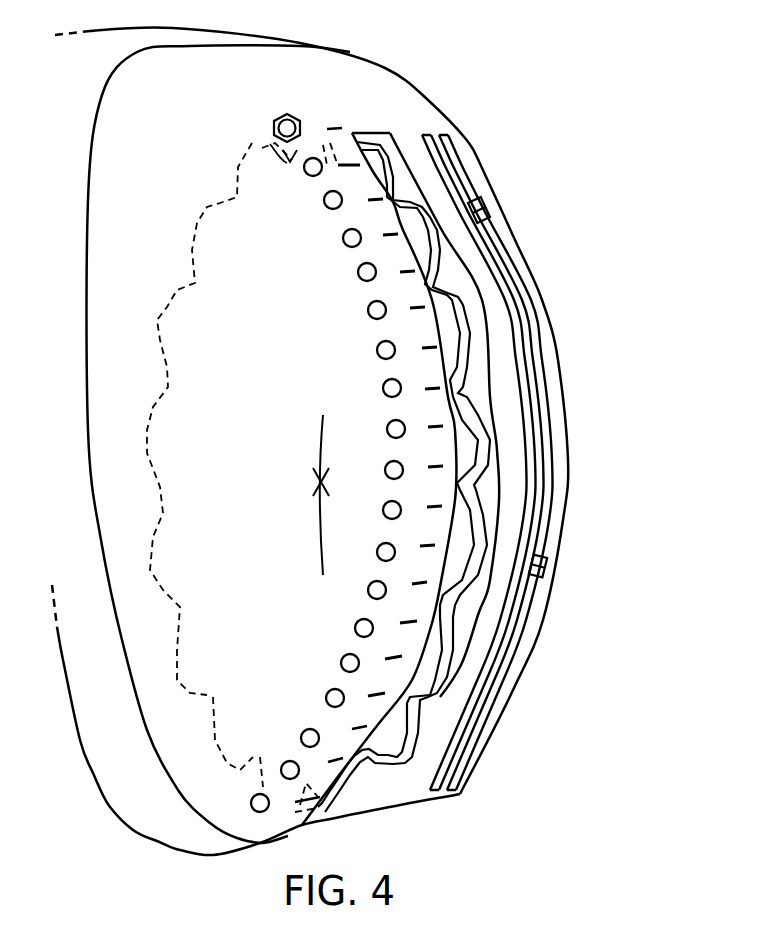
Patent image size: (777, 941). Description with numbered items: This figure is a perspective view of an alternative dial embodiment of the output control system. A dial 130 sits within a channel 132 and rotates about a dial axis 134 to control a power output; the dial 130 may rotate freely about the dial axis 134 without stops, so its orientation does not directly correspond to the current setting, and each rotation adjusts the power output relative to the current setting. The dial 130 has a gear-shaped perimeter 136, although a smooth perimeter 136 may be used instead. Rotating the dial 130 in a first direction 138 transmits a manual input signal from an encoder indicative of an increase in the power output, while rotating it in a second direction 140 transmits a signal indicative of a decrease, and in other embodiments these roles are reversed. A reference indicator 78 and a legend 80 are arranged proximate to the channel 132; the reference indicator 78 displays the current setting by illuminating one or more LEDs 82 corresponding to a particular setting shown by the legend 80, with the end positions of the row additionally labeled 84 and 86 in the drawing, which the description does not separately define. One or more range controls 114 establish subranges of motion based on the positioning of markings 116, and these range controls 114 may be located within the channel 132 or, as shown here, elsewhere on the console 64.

The console 64 is at (448, 63).
The reference indicator 78 is at (274, 114).
The legend 80 is at (331, 123).
The LEDs 82 is at (313, 178).
The first aperture 84 is at (272, 135).
The last aperture 86 is at (267, 795).
The range controls 114 is at (528, 368).
The markings 116 is at (489, 200).
The dial 130 is at (160, 319).
The channel 132 is at (372, 803).
The dial axis 134 is at (325, 509).
The perimeter 136 is at (194, 695).
The first direction 138 is at (342, 518).
The second direction 140 is at (309, 538).